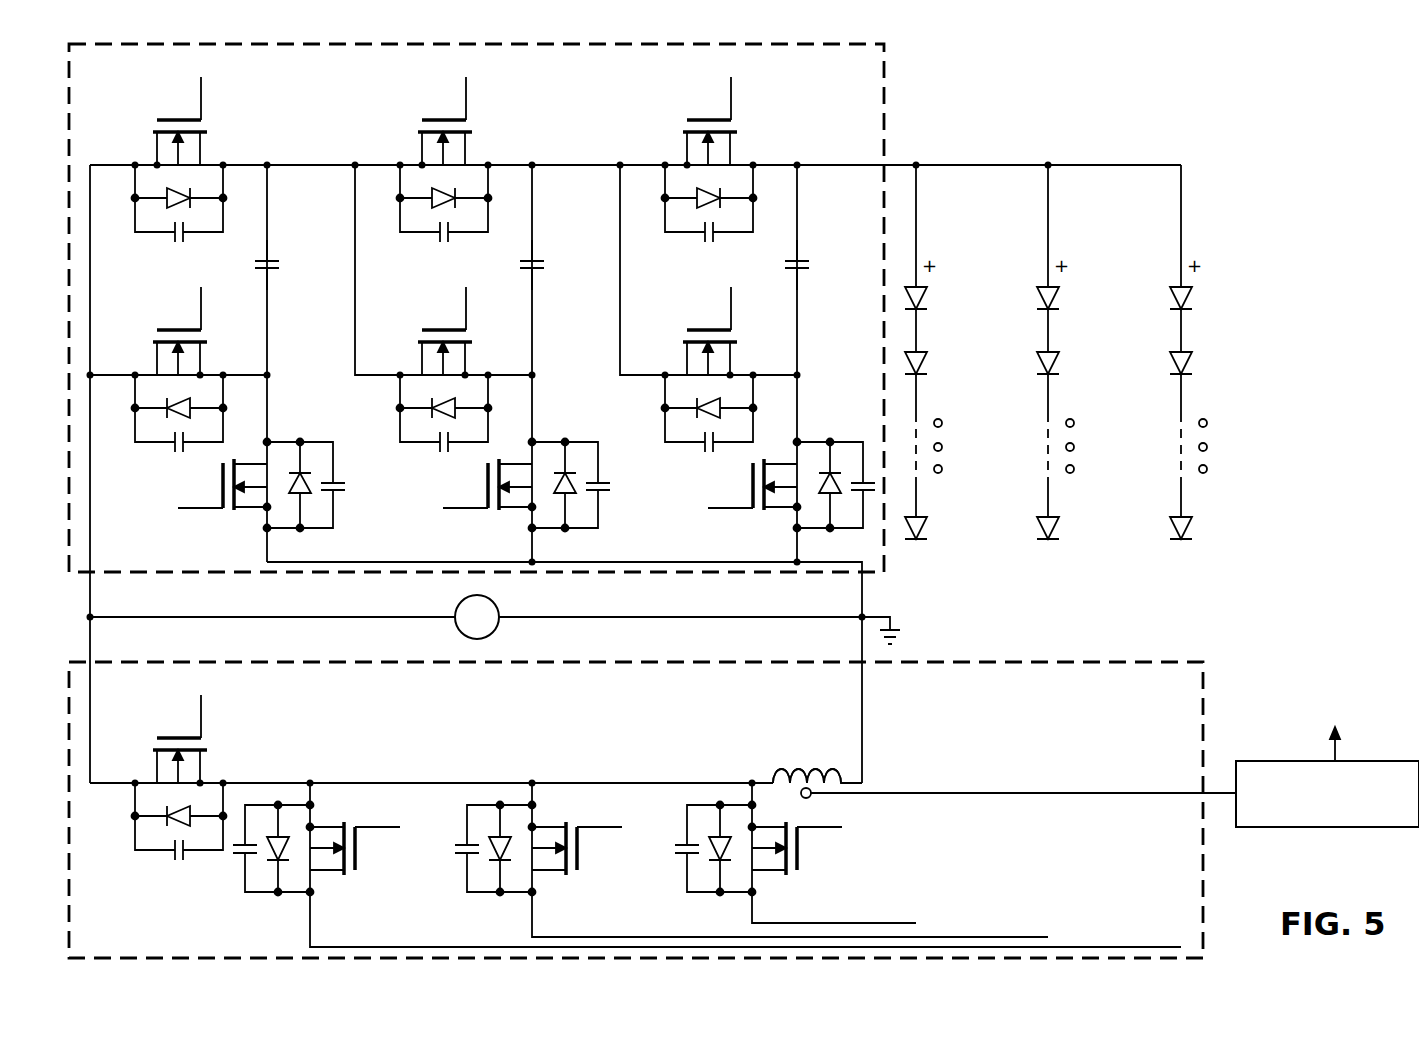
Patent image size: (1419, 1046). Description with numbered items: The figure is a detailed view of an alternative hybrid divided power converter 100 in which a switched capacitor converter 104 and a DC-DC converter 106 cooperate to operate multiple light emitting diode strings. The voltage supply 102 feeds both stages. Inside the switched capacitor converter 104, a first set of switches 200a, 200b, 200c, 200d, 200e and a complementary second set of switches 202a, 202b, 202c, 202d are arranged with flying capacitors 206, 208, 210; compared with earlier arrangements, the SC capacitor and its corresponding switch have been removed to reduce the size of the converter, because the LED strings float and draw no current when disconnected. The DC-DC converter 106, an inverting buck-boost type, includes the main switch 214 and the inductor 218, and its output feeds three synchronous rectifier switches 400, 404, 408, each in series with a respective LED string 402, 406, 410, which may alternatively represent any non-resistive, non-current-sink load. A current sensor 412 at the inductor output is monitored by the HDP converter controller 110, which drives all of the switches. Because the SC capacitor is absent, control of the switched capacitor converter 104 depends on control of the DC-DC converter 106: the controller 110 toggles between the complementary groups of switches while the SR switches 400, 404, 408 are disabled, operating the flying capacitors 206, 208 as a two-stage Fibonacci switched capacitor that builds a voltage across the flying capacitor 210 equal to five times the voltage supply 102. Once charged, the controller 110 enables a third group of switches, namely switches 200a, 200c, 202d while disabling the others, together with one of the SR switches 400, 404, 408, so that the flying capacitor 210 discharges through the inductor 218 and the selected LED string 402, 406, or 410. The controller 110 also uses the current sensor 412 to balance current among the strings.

The hybrid divided power converter 100 is at (1340, 106).
The voltage supply 102 is at (458, 626).
The switched capacitor converter 104 is at (890, 122).
The DC-DC converter 106 is at (1211, 851).
The HDP converter controller 110 is at (1347, 829).
The first set switch 200a is at (194, 104).
The first set switch 200b is at (210, 484).
The first set switch 200c is at (431, 314).
The first set switch 200d is at (724, 104).
The first set switch 200e is at (740, 484).
The second set switch 202a is at (166, 314).
The second set switch 202b is at (459, 104).
The second set switch 202c is at (475, 484).
The second set switch 202d is at (696, 314).
The flying capacitor 206 is at (272, 258).
The flying capacitor 208 is at (537, 258).
The flying capacitor 210 is at (802, 258).
The main switch 214 is at (166, 722).
The inductor 218 is at (777, 772).
The synchronous rectifier switch 400 is at (814, 861).
The LED string 402 is at (963, 262).
The synchronous rectifier switch 404 is at (594, 861).
The LED string 406 is at (1097, 262).
The synchronous rectifier switch 408 is at (374, 861).
The LED string 410 is at (1230, 262).
The current sensor 412 is at (813, 797).